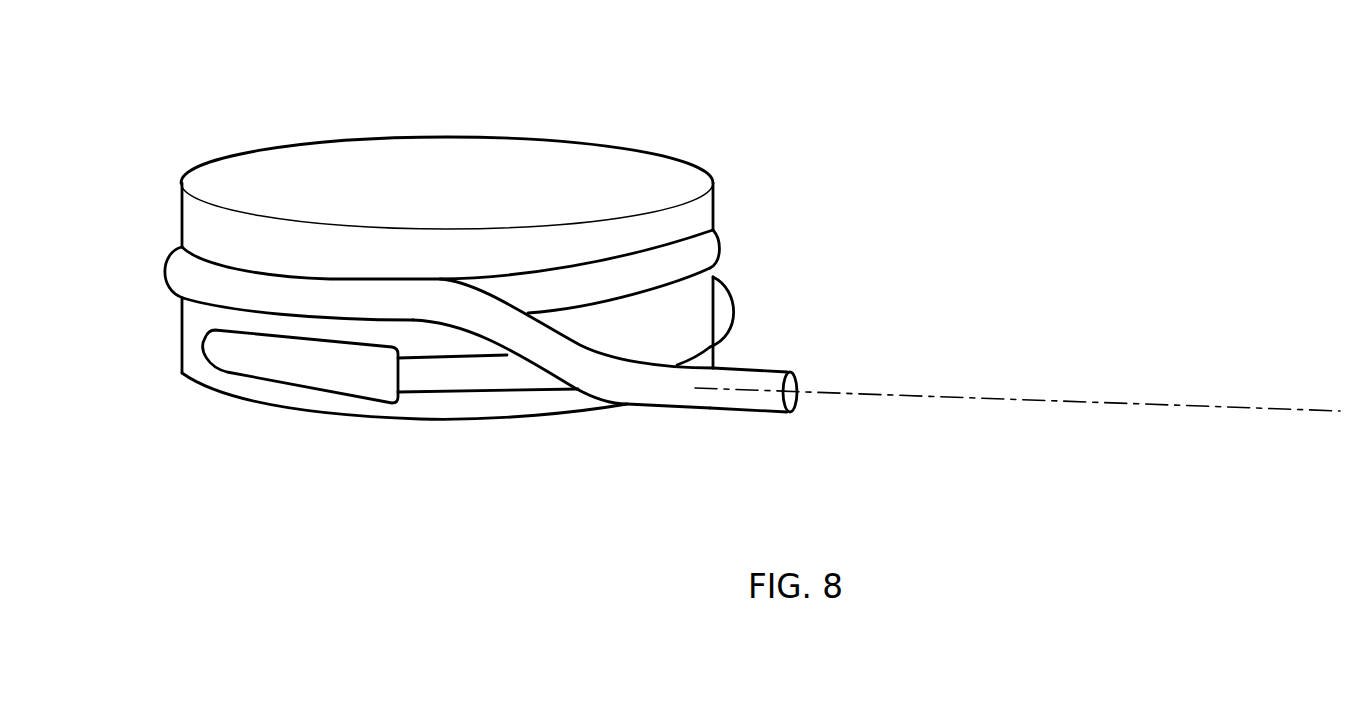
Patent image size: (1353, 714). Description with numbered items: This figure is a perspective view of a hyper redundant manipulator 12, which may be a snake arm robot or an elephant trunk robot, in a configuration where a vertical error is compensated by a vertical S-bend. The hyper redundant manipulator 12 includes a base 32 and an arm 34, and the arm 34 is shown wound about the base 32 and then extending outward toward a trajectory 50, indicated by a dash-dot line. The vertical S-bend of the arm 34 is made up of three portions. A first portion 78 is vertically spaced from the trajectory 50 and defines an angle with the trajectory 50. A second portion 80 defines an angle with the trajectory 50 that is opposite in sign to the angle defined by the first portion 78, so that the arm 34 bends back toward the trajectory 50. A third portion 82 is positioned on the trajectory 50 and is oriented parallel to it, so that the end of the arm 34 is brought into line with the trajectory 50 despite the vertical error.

The hyper redundant manipulator 12 is at (828, 118).
The base 32 is at (432, 160).
The arm 34 is at (497, 380).
The trajectory 50 is at (1140, 402).
The first portion 78 is at (364, 264).
The second portion 80 is at (566, 335).
The third portion 82 is at (760, 428).